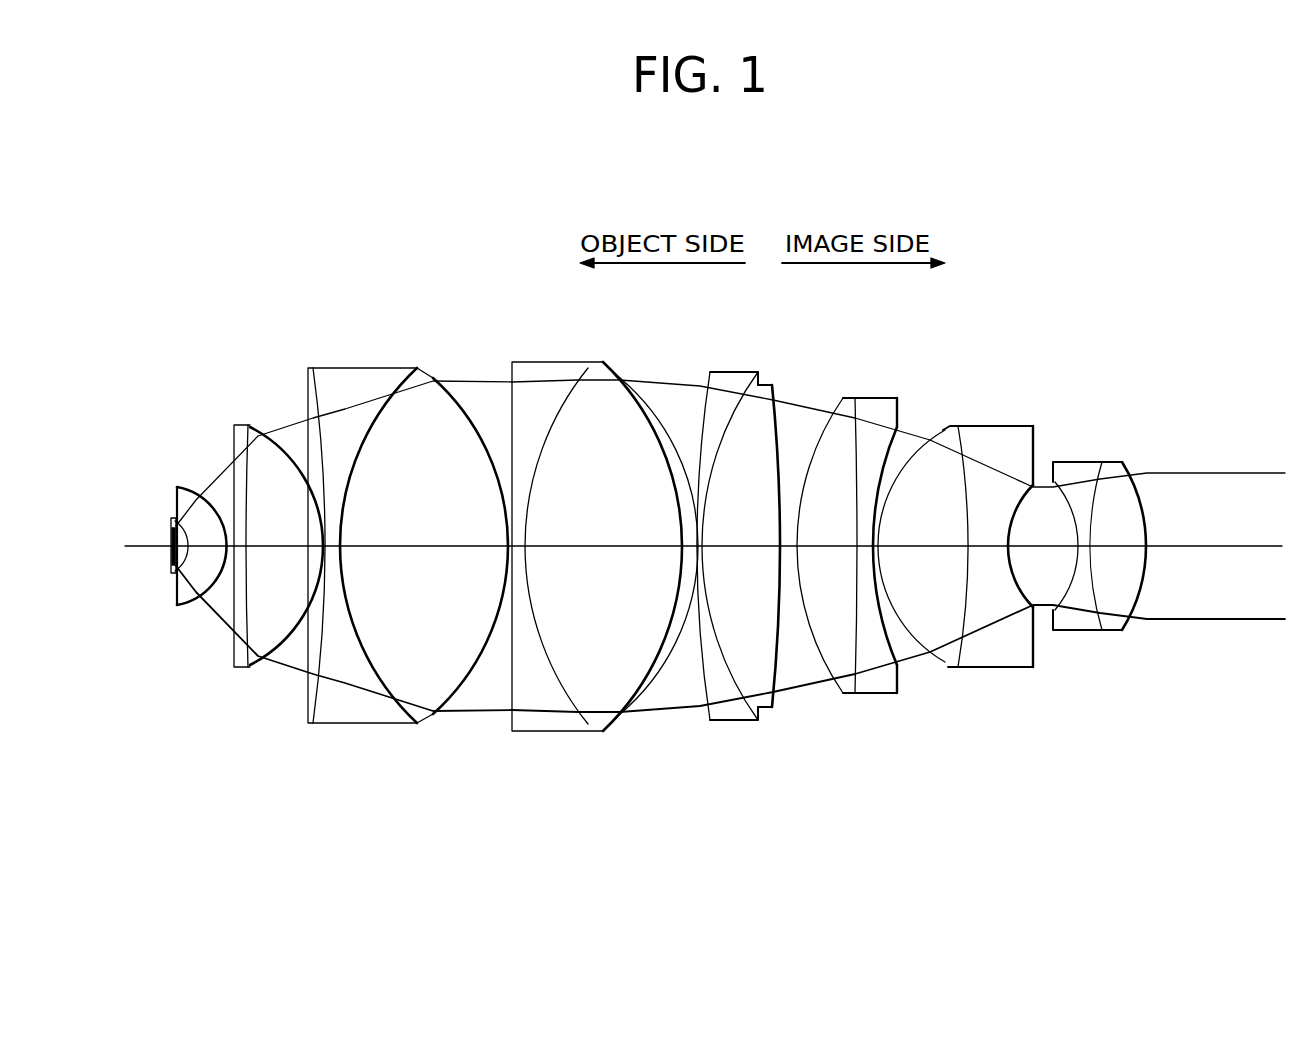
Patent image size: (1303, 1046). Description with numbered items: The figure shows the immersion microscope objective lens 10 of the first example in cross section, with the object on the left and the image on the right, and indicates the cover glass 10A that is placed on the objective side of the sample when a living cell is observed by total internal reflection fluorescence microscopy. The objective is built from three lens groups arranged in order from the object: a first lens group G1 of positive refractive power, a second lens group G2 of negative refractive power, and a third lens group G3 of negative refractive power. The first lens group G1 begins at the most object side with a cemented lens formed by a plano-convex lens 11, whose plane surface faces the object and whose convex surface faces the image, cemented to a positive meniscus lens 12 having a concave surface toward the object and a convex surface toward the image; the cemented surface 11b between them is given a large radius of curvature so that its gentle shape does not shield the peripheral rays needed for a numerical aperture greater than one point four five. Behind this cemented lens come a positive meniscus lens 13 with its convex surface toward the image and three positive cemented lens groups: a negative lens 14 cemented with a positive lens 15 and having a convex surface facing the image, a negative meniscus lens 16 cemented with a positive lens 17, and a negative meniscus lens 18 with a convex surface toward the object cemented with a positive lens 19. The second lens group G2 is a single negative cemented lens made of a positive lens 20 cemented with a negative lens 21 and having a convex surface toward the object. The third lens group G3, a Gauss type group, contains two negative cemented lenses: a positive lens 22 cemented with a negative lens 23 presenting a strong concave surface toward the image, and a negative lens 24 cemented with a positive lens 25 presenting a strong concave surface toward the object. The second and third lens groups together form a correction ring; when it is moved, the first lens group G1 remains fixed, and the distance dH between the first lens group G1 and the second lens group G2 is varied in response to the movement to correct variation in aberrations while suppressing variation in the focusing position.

The immersion microscope objective lens 10 is at (243, 214).
The cover glass 10A is at (172, 571).
The plano-convex lens 11 is at (178, 598).
The cemented surface 11b is at (194, 527).
The positive meniscus lens 12 is at (212, 587).
The positive meniscus lens 13 is at (243, 668).
The negative lens 14 is at (347, 717).
The positive lens 15 is at (423, 725).
The negative meniscus lens 16 is at (542, 725).
The positive lens 17 is at (603, 725).
The negative meniscus lens 18 is at (737, 715).
The positive lens 19 is at (765, 713).
The positive lens 20 is at (848, 694).
The negative lens 21 is at (880, 695).
The positive lens 22 is at (950, 658).
The negative lens 23 is at (1007, 658).
The negative lens 24 is at (1075, 622).
The positive lens 25 is at (1112, 622).
The distance between the first lens group and the second lens group dH is at (792, 556).
The first lens group G1 is at (782, 348).
The second lens group G2 is at (803, 382).
The third lens group G3 is at (1132, 408).